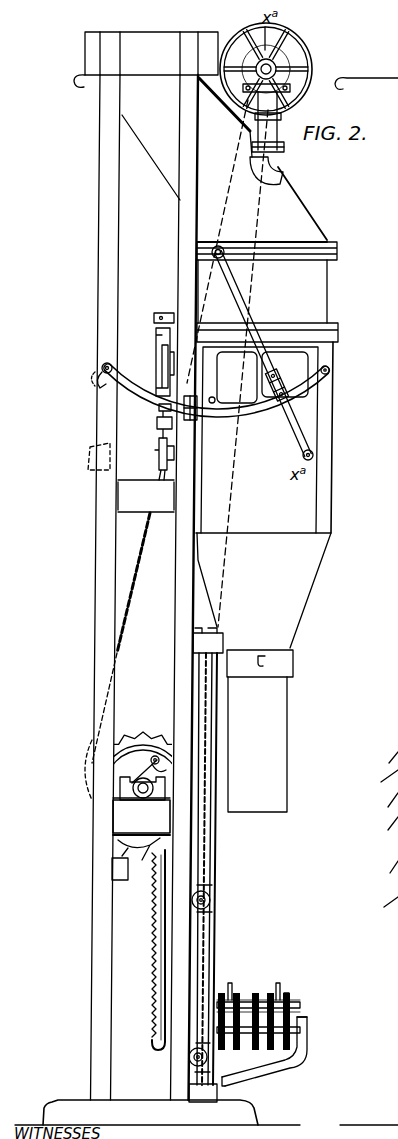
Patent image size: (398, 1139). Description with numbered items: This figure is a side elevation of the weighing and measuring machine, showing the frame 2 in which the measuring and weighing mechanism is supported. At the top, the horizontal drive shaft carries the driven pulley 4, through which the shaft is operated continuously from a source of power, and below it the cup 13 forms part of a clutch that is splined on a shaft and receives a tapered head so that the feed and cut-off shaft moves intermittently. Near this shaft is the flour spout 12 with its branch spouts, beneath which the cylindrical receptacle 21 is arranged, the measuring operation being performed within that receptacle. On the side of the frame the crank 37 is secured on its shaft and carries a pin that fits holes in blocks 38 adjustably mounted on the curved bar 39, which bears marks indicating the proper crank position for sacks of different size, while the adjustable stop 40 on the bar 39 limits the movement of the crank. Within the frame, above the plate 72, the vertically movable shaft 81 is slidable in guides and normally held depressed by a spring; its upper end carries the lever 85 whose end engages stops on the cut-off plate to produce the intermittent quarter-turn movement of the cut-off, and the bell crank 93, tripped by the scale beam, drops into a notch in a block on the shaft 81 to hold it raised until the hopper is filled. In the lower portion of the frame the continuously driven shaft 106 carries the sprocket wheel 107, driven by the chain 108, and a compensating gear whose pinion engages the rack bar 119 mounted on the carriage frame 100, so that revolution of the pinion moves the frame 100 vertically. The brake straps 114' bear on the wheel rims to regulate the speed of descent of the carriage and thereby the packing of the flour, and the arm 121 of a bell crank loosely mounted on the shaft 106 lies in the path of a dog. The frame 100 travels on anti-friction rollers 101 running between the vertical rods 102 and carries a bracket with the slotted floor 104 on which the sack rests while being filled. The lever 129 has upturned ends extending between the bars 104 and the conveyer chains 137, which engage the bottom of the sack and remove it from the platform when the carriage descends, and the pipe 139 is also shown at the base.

The frame 2 is at (107, 178).
The driven pulley 4 is at (312, 52).
The cup 13 is at (276, 133).
The flour spout 12 is at (278, 200).
The cylindrical receptacle 21 is at (267, 292).
The crank 37 is at (303, 434).
The blocks 38 is at (290, 397).
The curved bar 39 is at (262, 418).
The adjustable stop 40 is at (196, 423).
The lever 85 is at (160, 318).
The bell crank 93 is at (158, 356).
The vertically movable shaft 81 is at (160, 413).
The plate 72 is at (160, 445).
The chain 108 is at (135, 612).
The sprocket wheel 107 is at (128, 733).
The arm 121 is at (117, 769).
The continuously driven shaft 106 is at (133, 805).
The brake straps 114' is at (138, 877).
The rack bar 119 is at (158, 932).
The rods 102 is at (192, 851).
The frame 100 is at (200, 968).
The anti-friction rollers 101 is at (208, 899).
The slotted floor 104 is at (293, 1005).
The lever 129 is at (278, 984).
The conveyer chains 137 is at (290, 993).
The pipe 139 is at (303, 1047).